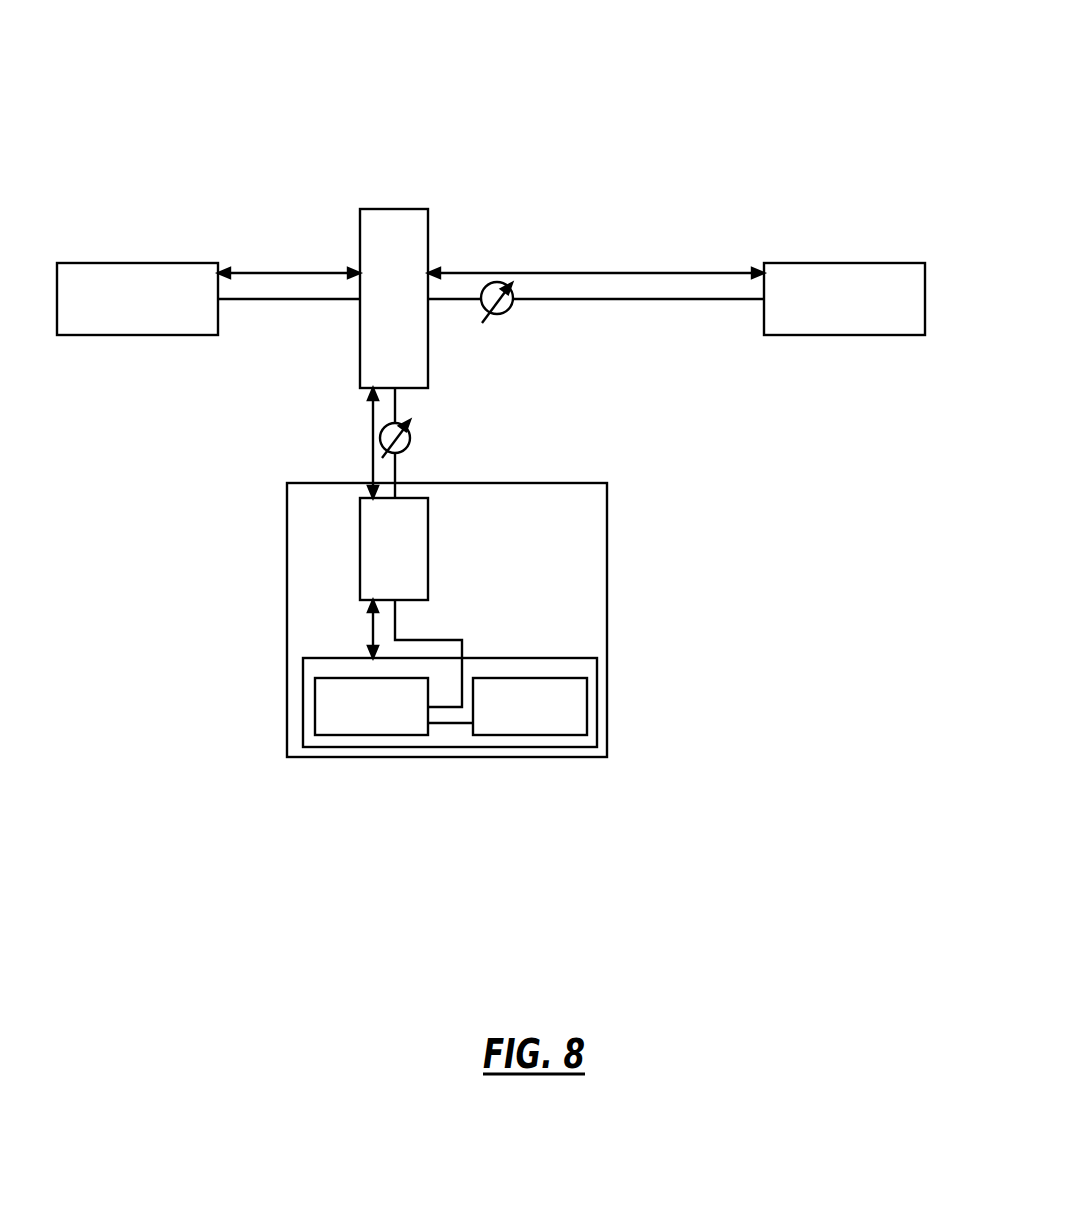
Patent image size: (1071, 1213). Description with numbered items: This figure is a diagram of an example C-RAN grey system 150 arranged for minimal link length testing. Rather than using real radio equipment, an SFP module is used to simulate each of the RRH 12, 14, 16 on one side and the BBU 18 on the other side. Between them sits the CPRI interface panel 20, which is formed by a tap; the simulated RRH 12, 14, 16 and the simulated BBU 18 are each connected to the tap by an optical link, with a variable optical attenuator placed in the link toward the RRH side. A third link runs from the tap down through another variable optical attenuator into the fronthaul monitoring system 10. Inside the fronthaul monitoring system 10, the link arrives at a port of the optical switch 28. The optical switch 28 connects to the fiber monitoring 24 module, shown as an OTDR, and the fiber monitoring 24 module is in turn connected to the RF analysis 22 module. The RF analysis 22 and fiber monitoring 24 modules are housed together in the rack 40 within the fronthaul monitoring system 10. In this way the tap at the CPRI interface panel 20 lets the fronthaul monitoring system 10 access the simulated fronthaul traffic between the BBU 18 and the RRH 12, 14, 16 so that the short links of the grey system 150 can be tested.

The C-RAN grey system 150 is at (523, 30).
The BBU 18 is at (142, 263).
The CPRI interface panel 20 is at (407, 209).
The RRH 12 is at (874, 272).
The RRH 14 is at (874, 272).
The RRH 16 is at (847, 263).
The fronthaul monitoring system 10 is at (607, 583).
The optical switch 28 is at (360, 534).
The rack 40 is at (488, 658).
The fiber monitoring 24 is at (352, 735).
The RF analysis 22 is at (538, 735).